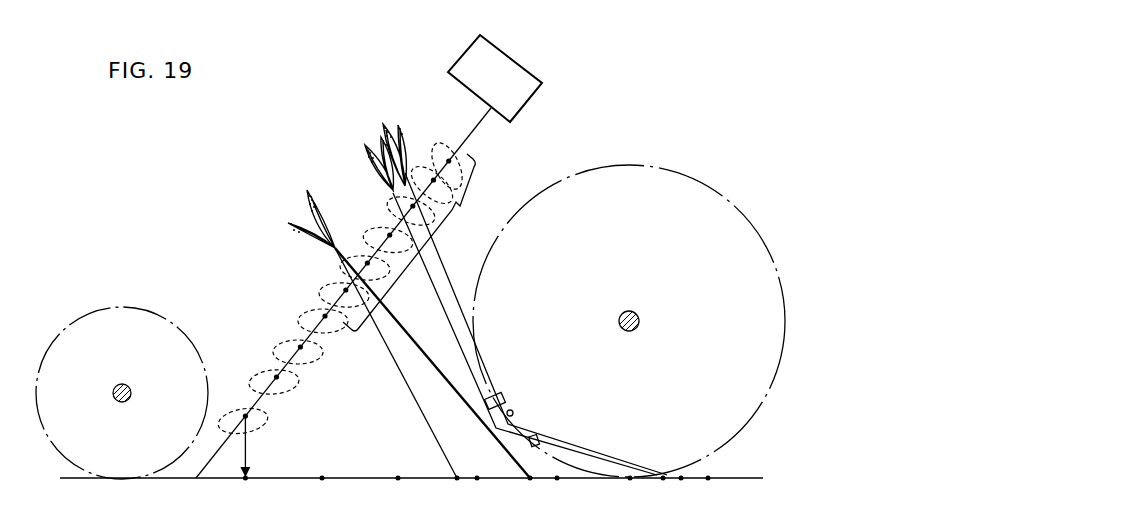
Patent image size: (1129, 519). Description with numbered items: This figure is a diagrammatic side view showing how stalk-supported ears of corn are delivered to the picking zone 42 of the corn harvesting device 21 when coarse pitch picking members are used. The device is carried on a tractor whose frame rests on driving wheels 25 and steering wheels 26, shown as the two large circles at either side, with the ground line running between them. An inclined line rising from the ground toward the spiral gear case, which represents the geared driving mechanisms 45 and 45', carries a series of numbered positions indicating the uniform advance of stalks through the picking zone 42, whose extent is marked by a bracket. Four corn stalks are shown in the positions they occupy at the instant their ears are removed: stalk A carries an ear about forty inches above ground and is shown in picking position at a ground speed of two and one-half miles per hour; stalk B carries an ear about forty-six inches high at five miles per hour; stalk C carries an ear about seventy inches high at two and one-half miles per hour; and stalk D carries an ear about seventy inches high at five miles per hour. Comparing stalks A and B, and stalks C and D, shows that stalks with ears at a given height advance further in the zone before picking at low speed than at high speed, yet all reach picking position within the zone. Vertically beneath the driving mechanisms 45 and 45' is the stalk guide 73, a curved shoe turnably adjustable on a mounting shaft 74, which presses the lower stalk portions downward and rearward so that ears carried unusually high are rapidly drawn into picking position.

The corn harvesting device 21 is at (128, 256).
The driving wheels 25 is at (740, 438).
The steering wheels 26 is at (66, 460).
The picking zone 42 is at (428, 242).
The geared driving mechanism 45 is at (487, 78).
The geared driving mechanism 45' is at (519, 55).
The stalk guide 73 is at (504, 408).
The mounting shaft 74 is at (514, 414).
The stalk A is at (419, 404).
The stalk B is at (444, 376).
The stalk C is at (446, 311).
The stalk D is at (458, 298).